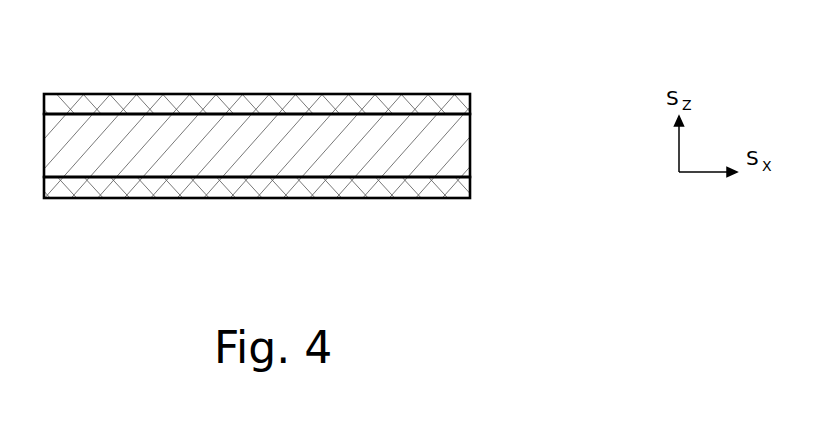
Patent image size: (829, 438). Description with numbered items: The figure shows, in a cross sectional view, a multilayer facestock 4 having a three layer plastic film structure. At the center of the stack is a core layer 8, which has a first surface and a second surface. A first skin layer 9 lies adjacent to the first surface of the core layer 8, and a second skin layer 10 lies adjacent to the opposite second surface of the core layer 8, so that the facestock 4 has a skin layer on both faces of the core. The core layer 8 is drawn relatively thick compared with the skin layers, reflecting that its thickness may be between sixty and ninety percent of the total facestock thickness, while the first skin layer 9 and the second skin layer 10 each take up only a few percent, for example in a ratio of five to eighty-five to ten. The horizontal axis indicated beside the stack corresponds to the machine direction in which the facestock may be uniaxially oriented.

The facestock 4 is at (240, 50).
The core layer 8 is at (470, 145).
The first skin layer 9 is at (470, 106).
The second skin layer 10 is at (470, 183).